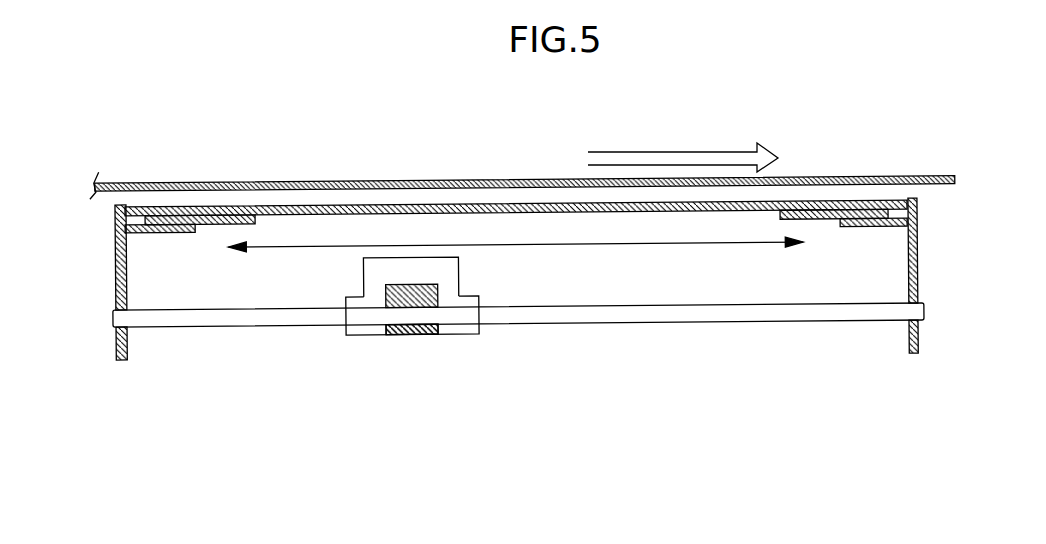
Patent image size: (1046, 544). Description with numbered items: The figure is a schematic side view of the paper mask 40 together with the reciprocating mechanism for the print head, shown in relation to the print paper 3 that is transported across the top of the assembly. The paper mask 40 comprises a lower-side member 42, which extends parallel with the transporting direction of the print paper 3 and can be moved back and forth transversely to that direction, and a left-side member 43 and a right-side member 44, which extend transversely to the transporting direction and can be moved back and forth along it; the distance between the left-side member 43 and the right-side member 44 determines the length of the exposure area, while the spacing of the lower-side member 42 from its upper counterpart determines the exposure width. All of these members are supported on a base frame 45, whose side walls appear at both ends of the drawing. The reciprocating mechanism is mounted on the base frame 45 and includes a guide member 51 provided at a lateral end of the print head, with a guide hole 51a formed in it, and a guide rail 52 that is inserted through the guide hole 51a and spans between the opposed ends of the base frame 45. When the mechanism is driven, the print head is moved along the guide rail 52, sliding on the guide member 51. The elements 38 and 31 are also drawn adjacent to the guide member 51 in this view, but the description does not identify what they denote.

The print paper 3 is at (323, 182).
The paper mask 40 is at (833, 200).
The lower-side member 42 is at (465, 205).
The left-side member 43 is at (217, 226).
The right-side member 44 is at (822, 220).
The base frame 45 is at (122, 362).
The guide block 38 is at (458, 280).
The bearing holder 31 is at (345, 339).
The guide member 51 is at (400, 338).
The guide hole 51a is at (427, 328).
The guide rail 52 is at (662, 322).